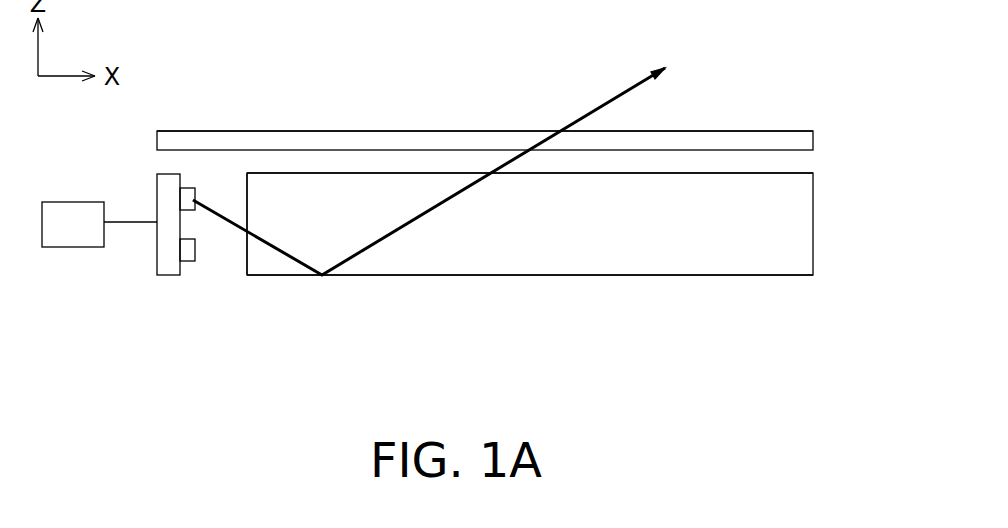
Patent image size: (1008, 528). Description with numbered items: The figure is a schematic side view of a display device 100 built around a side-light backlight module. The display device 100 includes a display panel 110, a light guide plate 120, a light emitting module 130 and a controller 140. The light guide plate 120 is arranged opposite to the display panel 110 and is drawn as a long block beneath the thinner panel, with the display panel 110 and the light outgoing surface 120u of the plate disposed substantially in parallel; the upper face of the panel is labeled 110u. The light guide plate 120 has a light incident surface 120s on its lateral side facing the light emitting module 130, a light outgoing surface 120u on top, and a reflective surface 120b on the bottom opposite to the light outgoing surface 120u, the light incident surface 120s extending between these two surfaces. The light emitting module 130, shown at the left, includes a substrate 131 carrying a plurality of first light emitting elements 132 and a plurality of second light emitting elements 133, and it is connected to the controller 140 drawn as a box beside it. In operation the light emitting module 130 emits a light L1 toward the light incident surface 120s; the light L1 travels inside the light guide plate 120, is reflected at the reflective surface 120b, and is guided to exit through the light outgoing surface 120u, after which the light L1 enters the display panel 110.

The display device 100 is at (431, 88).
The display panel 110 is at (797, 142).
The upper surface of cover plate 110u is at (648, 130).
The light guide plate 120 is at (525, 260).
The light incident surface 120s is at (247, 198).
The reflective surface 120b is at (627, 277).
The light outgoing surface 120u is at (678, 172).
The light emitting module 130 is at (188, 274).
The substrate 131 is at (167, 275).
The first light emitting elements 132 is at (186, 257).
The second light emitting elements 133 is at (192, 203).
The controller 140 is at (53, 236).
The light L1 is at (443, 158).